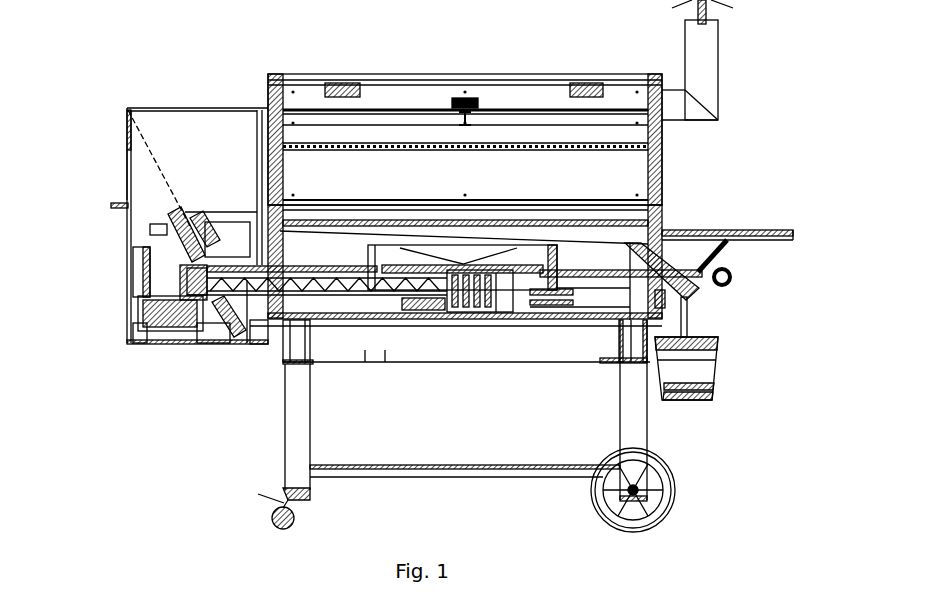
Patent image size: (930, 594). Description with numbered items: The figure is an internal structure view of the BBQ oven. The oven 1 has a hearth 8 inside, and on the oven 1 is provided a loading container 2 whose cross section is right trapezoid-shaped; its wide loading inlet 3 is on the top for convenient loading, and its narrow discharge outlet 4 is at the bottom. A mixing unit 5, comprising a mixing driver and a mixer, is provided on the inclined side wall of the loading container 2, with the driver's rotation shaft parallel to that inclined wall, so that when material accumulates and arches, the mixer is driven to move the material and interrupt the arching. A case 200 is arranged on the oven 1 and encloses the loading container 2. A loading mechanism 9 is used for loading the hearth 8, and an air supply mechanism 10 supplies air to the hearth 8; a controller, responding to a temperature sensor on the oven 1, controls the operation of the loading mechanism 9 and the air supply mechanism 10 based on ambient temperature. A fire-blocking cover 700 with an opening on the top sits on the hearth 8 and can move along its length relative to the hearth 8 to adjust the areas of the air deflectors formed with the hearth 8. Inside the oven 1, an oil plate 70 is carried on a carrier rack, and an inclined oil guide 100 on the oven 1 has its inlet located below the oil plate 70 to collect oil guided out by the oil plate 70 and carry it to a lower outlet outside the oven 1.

The oven 1 is at (410, 93).
The loading container 2 is at (167, 125).
The loading inlet 3 is at (217, 112).
The case 200 is at (137, 167).
The mixing unit 5 is at (168, 224).
The loading mechanism 9 is at (197, 290).
The air supply mechanism 10 is at (220, 310).
The discharge outlet 4 is at (247, 280).
The fire-blocking cover 700 is at (400, 248).
The hearth 8 is at (490, 307).
The oil plate 70 is at (610, 242).
The oil guide 100 is at (695, 365).